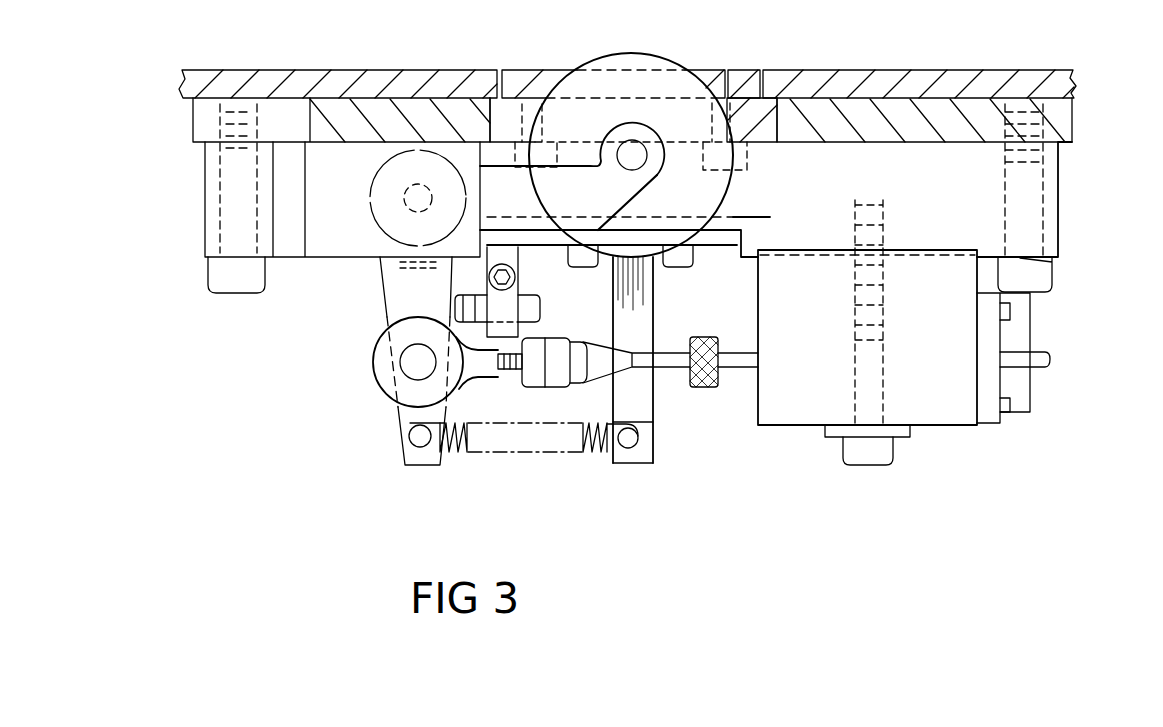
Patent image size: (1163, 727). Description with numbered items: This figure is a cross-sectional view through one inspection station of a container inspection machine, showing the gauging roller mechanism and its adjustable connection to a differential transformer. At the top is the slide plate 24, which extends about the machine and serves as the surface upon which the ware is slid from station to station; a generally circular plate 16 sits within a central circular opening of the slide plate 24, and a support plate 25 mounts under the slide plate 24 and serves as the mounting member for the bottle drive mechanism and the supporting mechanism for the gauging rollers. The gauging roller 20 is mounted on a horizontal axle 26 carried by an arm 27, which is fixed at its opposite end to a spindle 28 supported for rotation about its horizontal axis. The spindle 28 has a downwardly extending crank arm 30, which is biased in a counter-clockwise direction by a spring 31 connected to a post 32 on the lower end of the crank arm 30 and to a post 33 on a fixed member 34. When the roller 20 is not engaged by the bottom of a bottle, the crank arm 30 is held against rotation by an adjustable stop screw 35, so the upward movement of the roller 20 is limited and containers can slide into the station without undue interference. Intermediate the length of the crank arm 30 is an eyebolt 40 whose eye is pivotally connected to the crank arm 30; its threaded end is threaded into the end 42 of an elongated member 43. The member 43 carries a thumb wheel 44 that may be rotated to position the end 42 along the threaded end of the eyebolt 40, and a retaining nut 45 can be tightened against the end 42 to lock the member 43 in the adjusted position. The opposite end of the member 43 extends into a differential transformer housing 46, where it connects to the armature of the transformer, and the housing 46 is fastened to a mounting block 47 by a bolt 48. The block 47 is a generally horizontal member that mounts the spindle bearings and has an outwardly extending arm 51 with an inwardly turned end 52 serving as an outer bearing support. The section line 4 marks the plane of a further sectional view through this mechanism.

The section line 4- 4 is at (432, 147).
The plate 16 is at (743, 75).
The gauging roller 20 is at (648, 63).
The slide plate 24 is at (292, 80).
The support plate 25 is at (862, 100).
The horizontal axle 26 is at (629, 152).
The arm 27 is at (578, 206).
The spindle 28 is at (415, 199).
The crank arm 30 is at (398, 307).
The spring 31 is at (583, 454).
The post 32 is at (427, 436).
The post 33 is at (640, 445).
The fixed member 34 is at (640, 303).
The adjustable stop screw 35 is at (541, 298).
The eyebolt 40 is at (385, 383).
The end 42 is at (556, 377).
The elongated member 43 is at (597, 368).
The thumb wheel 44 is at (703, 388).
The retaining nut 45 is at (530, 368).
The differential transformer housing 46 is at (807, 413).
The mounting block 47 is at (990, 217).
The bolt 48 is at (858, 452).
The arm 51 is at (212, 231).
The inwardly turned end 52 is at (337, 252).